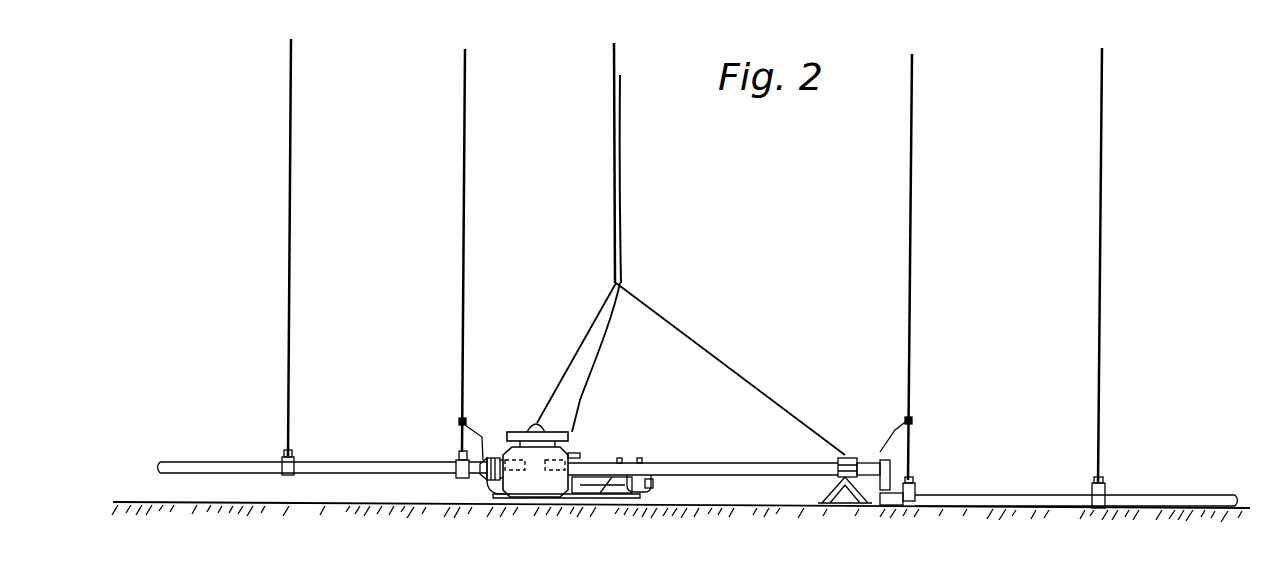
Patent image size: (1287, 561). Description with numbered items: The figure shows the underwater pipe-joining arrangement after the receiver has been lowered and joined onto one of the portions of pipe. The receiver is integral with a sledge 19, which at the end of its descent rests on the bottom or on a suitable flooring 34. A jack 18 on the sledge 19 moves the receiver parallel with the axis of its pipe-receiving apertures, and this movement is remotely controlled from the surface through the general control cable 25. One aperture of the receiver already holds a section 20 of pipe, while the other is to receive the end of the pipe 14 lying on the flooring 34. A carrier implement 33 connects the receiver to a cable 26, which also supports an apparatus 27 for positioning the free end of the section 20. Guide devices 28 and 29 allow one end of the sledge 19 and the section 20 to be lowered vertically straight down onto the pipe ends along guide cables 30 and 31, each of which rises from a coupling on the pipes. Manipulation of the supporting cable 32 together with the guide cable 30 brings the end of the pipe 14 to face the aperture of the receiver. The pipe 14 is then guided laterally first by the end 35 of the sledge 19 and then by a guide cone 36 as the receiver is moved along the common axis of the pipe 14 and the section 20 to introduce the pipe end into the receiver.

The pipe 14 is at (402, 466).
The jack 18 is at (606, 480).
The sledge 19 is at (552, 498).
The pipe section 20 is at (715, 470).
The general control cable 25 is at (604, 340).
The cable 26 is at (614, 232).
The positioning apparatus 27 is at (823, 491).
The guide device 28 is at (476, 424).
The guide device 29 is at (880, 452).
The guide cable 30 is at (465, 300).
The guide cable 31 is at (912, 308).
The supporting cable 32 is at (291, 348).
The carrier implement 33 is at (528, 430).
The flooring 34 is at (683, 507).
The end of the sledge 35 is at (490, 483).
The guide cone 36 is at (490, 458).